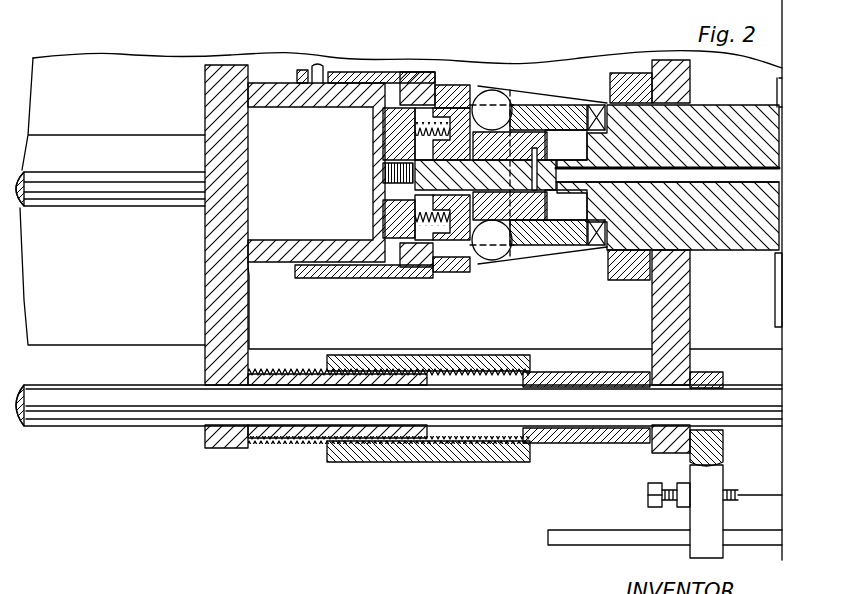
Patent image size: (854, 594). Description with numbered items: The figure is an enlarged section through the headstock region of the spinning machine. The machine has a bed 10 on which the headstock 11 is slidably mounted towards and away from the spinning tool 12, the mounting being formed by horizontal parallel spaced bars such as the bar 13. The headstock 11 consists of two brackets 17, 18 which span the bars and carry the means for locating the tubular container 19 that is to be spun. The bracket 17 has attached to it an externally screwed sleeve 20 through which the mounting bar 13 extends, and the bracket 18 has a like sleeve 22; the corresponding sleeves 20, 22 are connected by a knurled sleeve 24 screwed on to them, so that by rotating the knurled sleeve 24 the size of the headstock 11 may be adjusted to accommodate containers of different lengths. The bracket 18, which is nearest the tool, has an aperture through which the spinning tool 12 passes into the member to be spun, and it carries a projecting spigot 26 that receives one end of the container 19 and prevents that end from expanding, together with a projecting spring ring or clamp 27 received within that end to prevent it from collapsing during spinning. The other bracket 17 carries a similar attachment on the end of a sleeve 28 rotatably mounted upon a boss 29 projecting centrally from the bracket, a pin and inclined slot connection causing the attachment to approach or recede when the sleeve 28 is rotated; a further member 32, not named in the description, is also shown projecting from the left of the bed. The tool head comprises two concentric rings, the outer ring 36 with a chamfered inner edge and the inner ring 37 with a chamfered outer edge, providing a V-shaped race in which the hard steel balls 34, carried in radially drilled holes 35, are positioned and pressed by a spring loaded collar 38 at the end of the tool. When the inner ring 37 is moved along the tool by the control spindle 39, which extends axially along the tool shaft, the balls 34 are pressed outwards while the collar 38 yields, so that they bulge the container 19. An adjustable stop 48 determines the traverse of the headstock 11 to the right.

The bed 10 is at (57, 334).
The headstock 11 is at (258, 265).
The spinning tool 12 is at (568, 140).
The horizontal support bar 13 is at (90, 407).
The bracket 17 is at (232, 320).
The bracket 18 is at (660, 292).
The tubular container 19 is at (508, 86).
The externally screwed sleeve 20 is at (287, 443).
The externally screwed sleeve 22 is at (637, 440).
The knurled sleeve 24 is at (462, 462).
The projecting spigot 26 is at (608, 272).
The spring ring or clamp 27 is at (660, 255).
The sleeve 28 is at (364, 274).
The boss 29 is at (252, 240).
The rod 32 is at (58, 203).
The hard steel balls 34 is at (497, 252).
The holes 35 is at (463, 268).
The outer ring 36 is at (582, 112).
The inner ring 37 is at (541, 246).
The spring loaded collar 38 is at (433, 242).
The control spindle 39 is at (760, 180).
The adjustable stop 48 is at (742, 540).